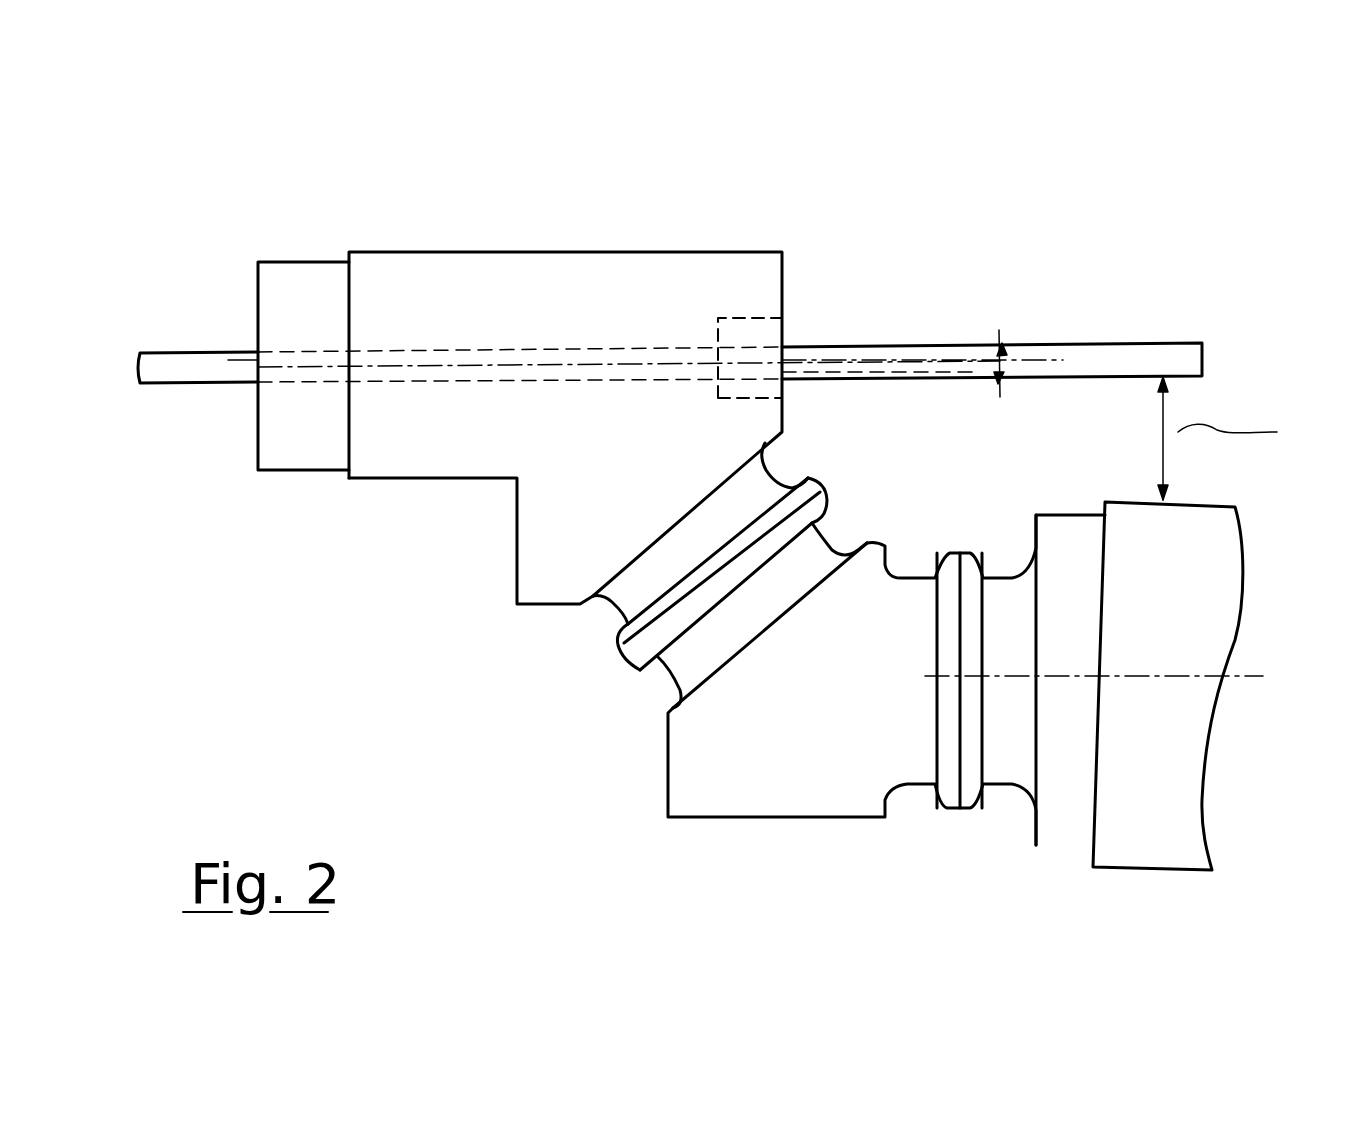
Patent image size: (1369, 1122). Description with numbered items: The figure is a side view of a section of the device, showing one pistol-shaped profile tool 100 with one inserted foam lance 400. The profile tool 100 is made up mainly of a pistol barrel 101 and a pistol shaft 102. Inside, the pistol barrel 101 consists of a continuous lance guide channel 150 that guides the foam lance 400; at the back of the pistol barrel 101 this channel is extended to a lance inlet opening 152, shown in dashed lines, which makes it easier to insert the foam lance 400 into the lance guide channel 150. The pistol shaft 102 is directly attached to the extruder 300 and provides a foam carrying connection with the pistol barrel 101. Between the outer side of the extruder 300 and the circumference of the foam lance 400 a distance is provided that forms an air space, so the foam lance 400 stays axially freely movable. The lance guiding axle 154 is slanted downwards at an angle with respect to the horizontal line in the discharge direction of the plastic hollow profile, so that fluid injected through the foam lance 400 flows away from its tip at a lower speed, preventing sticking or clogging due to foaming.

The pistol-shaped profile tool 100 is at (748, 469).
The pistol barrel 101 is at (255, 138).
The pistol shaft 102 is at (820, 383).
The lance guide channel 150 is at (253, 364).
The lance inlet opening 152 is at (760, 337).
The lance guiding axle 154 is at (943, 358).
The extruder 300 is at (1217, 580).
The foam lance 400 is at (1163, 343).